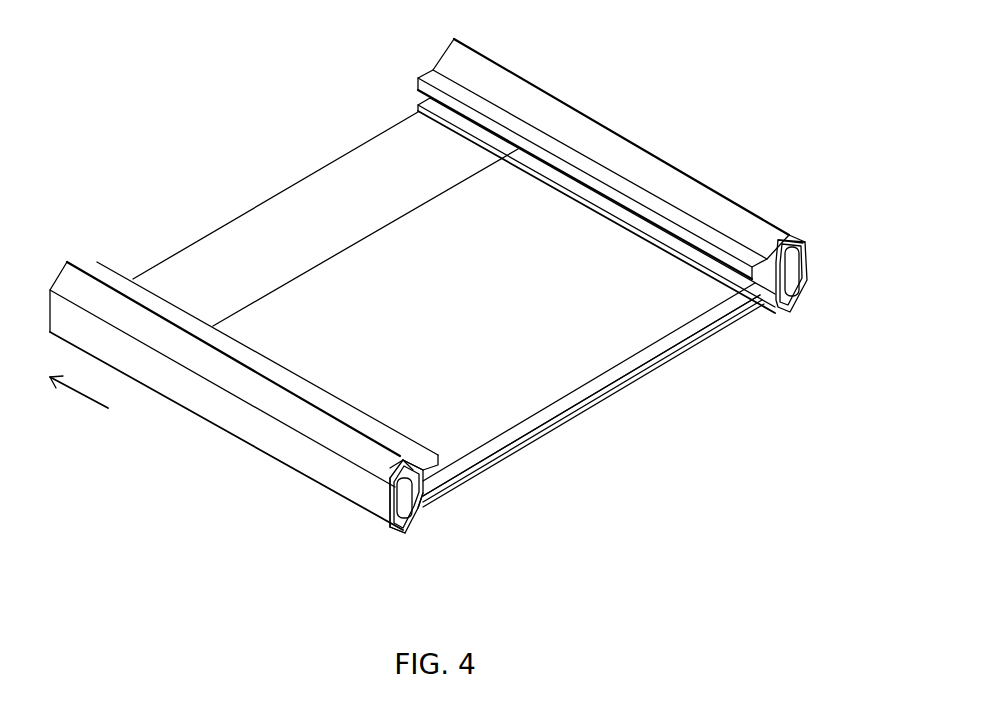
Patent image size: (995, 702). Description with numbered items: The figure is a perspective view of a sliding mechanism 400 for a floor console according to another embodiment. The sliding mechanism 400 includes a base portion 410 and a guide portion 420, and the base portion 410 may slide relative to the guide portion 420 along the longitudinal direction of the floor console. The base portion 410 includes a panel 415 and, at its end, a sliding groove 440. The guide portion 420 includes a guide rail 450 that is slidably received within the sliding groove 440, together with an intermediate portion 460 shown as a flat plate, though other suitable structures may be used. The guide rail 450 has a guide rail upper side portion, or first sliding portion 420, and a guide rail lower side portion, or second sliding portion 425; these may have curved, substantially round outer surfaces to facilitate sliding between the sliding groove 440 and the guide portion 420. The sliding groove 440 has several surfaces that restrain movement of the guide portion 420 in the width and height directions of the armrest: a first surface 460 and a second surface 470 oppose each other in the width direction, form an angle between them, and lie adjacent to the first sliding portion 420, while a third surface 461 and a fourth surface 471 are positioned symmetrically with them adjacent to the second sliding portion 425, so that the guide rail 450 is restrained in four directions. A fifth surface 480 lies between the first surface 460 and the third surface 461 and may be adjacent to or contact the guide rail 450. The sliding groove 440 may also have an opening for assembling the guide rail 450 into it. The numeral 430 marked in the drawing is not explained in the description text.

The sliding mechanism 400 is at (768, 96).
The base portion 410 is at (262, 262).
The panel 415 is at (693, 347).
The guide portion 420 is at (803, 300).
The second sliding portion 425 is at (803, 243).
The end cap 430 is at (785, 232).
The sliding groove 440 is at (628, 138).
The guide rail 450 is at (806, 266).
The intermediate portion 460 is at (562, 405).
The third surface 461 is at (390, 468).
The second surface 470 is at (422, 517).
The fourth surface 471 is at (413, 470).
The fifth surface 480 is at (383, 493).